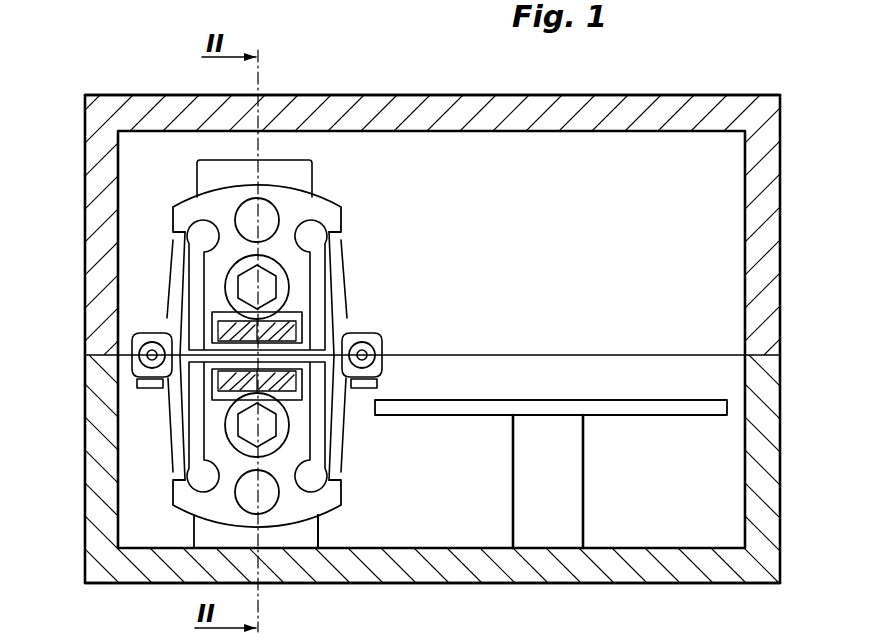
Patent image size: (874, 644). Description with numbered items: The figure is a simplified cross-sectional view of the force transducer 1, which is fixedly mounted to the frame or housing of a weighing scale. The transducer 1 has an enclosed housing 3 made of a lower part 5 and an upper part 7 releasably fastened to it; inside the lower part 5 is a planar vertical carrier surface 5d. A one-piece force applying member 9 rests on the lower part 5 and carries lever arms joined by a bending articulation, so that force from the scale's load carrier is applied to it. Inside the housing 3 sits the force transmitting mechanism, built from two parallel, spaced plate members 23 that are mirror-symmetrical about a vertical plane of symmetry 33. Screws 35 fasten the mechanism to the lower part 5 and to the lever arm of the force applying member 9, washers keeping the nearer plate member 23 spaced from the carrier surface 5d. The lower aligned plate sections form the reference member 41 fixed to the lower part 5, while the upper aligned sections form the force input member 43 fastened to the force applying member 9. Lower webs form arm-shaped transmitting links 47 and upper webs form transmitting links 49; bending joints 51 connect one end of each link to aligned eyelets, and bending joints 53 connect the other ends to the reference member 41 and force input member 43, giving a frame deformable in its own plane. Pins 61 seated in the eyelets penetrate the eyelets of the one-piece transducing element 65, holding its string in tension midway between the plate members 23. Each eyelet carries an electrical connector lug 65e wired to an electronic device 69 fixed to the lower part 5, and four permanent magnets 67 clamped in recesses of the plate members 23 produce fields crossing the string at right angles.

The force transducer 1 is at (84, 120).
The housing 3 is at (84, 160).
The lower part 5 is at (84, 514).
The planar vertical carrier surface 5d is at (303, 541).
The upper part 7 is at (146, 95).
The force applying member 9 is at (285, 162).
The plate members 23 is at (346, 214).
The vertical plane of symmetry 33 is at (265, 551).
The screws 35 is at (288, 274).
The reference member 41 is at (186, 412).
The force input member 43 is at (181, 252).
The transmitting link 47 is at (161, 447).
The transmitting link 49 is at (197, 270).
The bending joint 51 is at (164, 285).
The bending joint 53 is at (174, 228).
The pin 61 is at (163, 332).
The transducing element 65 is at (333, 336).
The electrical connector lug 65e is at (134, 383).
The permanent magnets 67 is at (305, 399).
The electronic device 69 is at (609, 401).